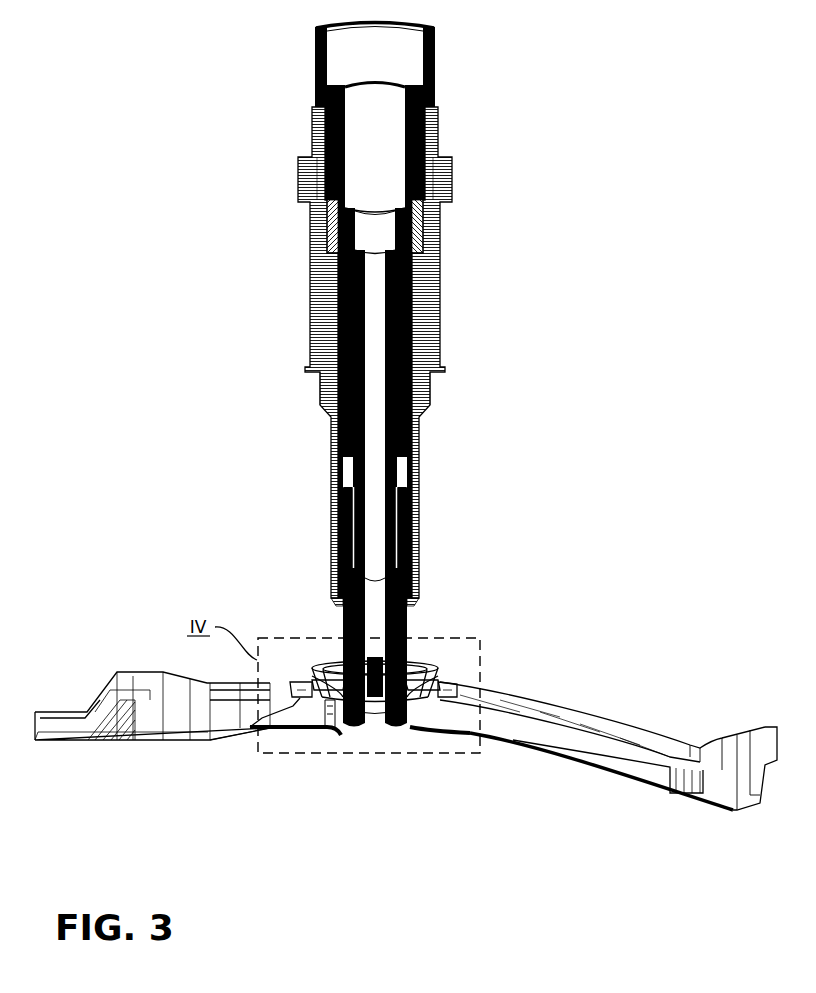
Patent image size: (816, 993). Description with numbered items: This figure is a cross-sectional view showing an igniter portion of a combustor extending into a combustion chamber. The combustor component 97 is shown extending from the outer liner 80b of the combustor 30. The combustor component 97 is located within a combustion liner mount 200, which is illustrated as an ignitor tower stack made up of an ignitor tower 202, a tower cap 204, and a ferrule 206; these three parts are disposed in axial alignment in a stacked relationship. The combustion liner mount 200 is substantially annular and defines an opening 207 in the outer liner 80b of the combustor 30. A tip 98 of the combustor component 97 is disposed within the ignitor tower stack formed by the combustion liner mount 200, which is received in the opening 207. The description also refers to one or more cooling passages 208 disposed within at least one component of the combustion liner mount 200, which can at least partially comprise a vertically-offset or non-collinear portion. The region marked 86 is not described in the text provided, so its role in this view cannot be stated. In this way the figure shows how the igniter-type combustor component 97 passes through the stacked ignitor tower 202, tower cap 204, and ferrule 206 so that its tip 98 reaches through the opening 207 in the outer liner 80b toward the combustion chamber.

The combustor component 97 is at (475, 313).
The combustor 30 is at (406, 691).
The combustion liner mount 200 is at (318, 658).
The ferrule 206 is at (412, 670).
The tower cap 204 is at (458, 696).
The outer liner 80b is at (560, 707).
The cooling passages 208 is at (250, 740).
The mounting region 86 is at (288, 800).
The opening 207 is at (337, 712).
The tip 98 is at (375, 708).
The ignitor tower 202 is at (428, 737).